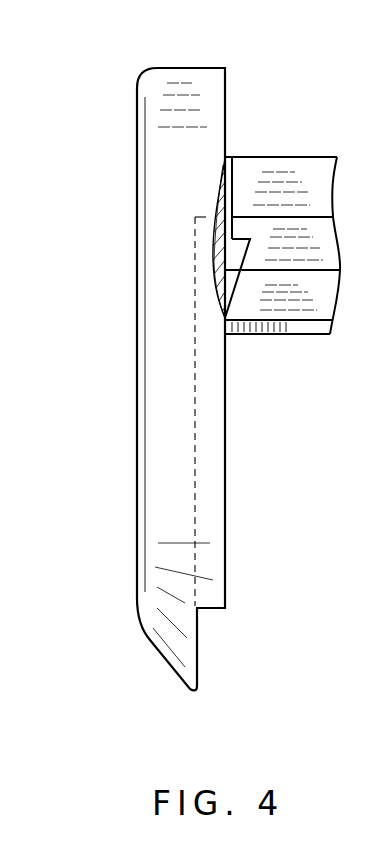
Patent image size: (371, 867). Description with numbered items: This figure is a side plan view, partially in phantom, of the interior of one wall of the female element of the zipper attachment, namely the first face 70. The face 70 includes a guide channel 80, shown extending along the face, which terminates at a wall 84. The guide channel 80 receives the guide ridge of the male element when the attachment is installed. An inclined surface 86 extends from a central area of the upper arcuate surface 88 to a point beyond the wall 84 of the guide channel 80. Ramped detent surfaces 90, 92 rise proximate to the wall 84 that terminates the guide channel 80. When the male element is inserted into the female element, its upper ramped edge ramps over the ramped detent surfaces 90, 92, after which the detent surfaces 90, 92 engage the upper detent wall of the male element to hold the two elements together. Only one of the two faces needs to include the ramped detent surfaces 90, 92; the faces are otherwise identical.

The first face 70 is at (148, 543).
The guide channel 80 is at (197, 455).
The wall 84 is at (213, 217).
The inclined surface 86 is at (227, 197).
The upper arcuate surface 88 is at (192, 68).
The ramped detent surface 90 is at (281, 325).
The ramped detent surface 92 is at (232, 255).